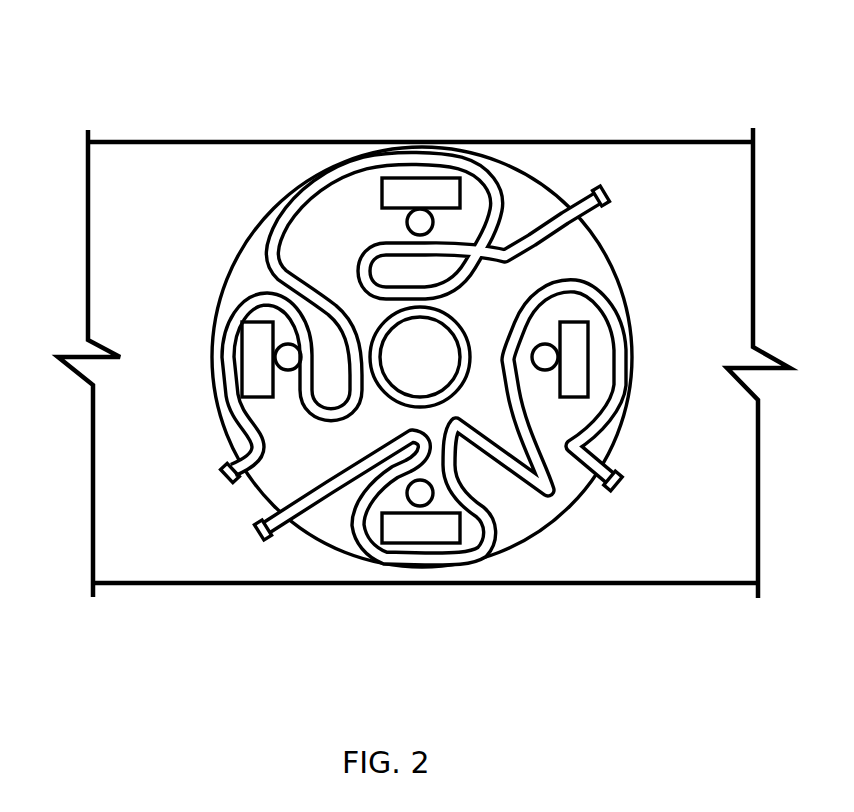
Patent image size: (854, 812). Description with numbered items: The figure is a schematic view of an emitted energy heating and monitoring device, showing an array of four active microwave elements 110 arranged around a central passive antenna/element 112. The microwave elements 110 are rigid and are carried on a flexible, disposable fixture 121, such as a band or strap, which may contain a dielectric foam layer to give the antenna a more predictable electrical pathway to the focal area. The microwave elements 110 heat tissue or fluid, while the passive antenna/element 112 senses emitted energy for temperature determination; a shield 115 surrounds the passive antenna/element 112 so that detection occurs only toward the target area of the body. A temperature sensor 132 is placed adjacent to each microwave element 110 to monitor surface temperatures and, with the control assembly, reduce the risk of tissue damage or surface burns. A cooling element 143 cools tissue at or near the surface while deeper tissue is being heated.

The microwave element 110 is at (400, 190).
The passive antenna/element 112 is at (437, 362).
The shield 115 is at (442, 312).
The fixture 121 is at (178, 550).
The temperature sensor 132 is at (424, 212).
The cooling element 143 is at (327, 192).